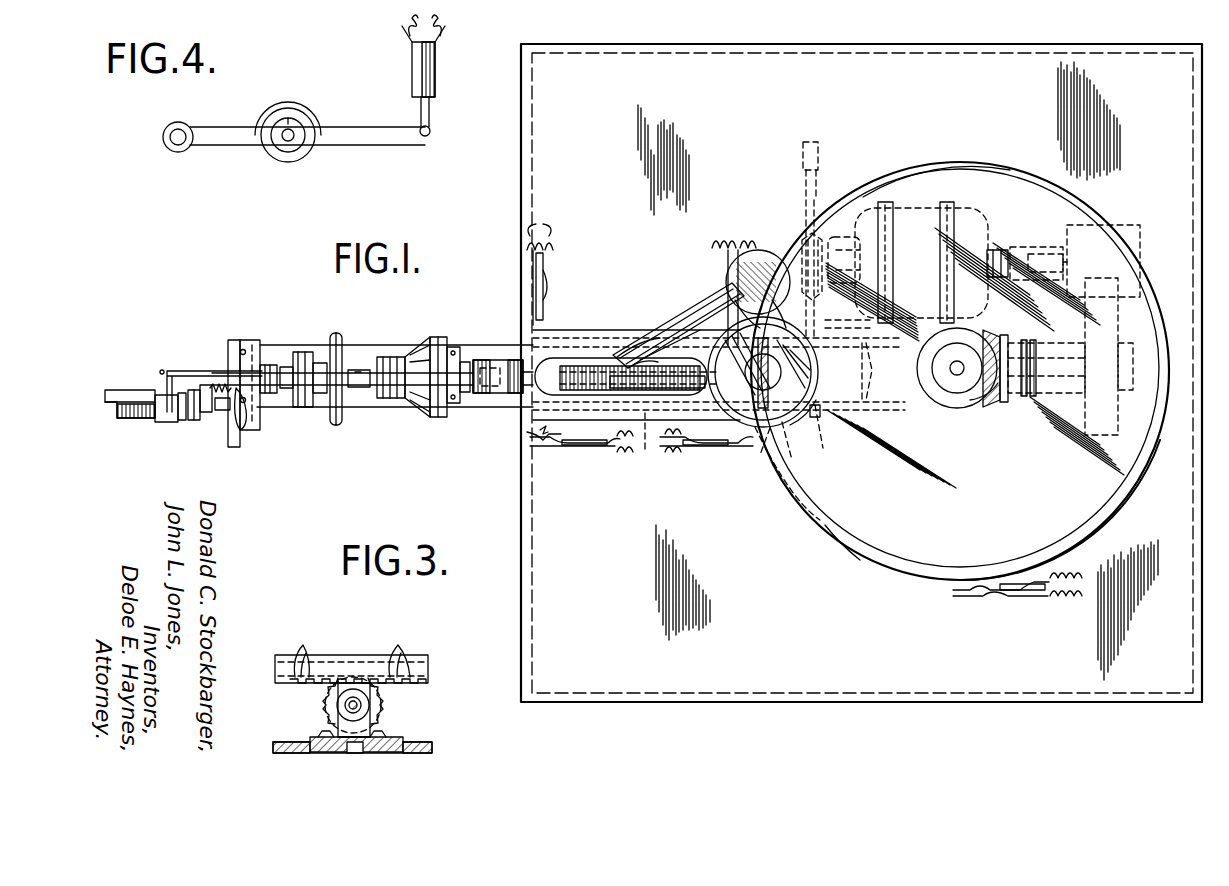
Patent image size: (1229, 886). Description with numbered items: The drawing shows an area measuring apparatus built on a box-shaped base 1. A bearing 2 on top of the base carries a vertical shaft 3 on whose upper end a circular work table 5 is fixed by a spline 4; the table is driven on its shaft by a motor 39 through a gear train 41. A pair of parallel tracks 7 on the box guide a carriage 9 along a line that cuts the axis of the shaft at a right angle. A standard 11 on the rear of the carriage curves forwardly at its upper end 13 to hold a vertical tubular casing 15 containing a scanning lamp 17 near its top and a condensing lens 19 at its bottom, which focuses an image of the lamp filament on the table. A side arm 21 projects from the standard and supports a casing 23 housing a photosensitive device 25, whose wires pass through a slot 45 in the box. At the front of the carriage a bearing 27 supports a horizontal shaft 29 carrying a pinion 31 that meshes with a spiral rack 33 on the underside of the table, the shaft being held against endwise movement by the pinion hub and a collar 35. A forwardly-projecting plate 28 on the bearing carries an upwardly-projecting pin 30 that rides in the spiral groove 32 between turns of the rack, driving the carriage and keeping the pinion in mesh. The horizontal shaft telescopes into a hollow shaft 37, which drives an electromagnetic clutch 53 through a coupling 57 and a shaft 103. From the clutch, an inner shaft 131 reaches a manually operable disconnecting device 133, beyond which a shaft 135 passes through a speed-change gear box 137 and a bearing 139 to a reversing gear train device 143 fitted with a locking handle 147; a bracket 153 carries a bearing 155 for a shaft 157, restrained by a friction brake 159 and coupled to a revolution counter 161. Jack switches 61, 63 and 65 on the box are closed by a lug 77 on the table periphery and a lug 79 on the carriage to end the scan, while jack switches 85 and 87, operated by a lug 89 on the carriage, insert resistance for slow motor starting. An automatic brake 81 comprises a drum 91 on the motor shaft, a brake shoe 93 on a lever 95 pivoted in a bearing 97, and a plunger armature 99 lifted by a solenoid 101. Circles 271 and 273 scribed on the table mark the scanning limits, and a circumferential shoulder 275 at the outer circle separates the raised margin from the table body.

In FIG. 1, the base 1 is at (548, 602).
In FIG. 3, the base 1 is at (285, 757).
In FIG. 1, the bearing 2 is at (960, 408).
In FIG. 1, the vertical shaft 3 is at (950, 376).
In FIG. 1, the spline 4 is at (965, 362).
In FIG. 1, the circular work table 5 is at (1127, 462).
In FIG. 3, the circular work table 5 is at (365, 661).
In FIG. 1, the tracks 7 is at (880, 368).
In FIG. 3, the tracks 7 is at (312, 755).
In FIG. 1, the carriage 9 is at (616, 334).
In FIG. 3, the carriage 9 is at (382, 734).
In FIG. 1, the standard 11 is at (552, 358).
In FIG. 1, the forwardly curved upper end of standard 13 is at (698, 390).
In FIG. 1, the vertical tubular casing 15 is at (788, 424).
In FIG. 1, the scanning lamp 17 is at (818, 372).
In FIG. 1, the condensing lens 19 is at (780, 430).
In FIG. 1, the side arm 21 is at (700, 322).
In FIG. 1, the casing 23 is at (766, 258).
In FIG. 1, the photosensitive device 25 is at (782, 302).
In FIG. 1, the bearing 27 is at (755, 452).
In FIG. 3, the bearing 27 is at (372, 712).
In FIG. 3, the forwardly-projecting plate 28 is at (372, 690).
In FIG. 1, the horizontal shaft 29 is at (688, 330).
In FIG. 3, the horizontal shaft 29 is at (337, 708).
In FIG. 3, the upwardly-projecting pin 30 is at (350, 678).
In FIG. 1, the pinion 31 is at (780, 380).
In FIG. 3, the pinion 31 is at (332, 735).
In FIG. 3, the spiral groove 32 is at (398, 648).
In FIG. 3, the spiral rack 33 is at (300, 648).
In FIG. 1, the collar 35 is at (712, 330).
In FIG. 3, the collar 35 is at (345, 705).
In FIG. 1, the hollow shaft 37 is at (590, 354).
In FIG. 1, the motor 39 is at (918, 205).
In FIG. 1, the gear train 41 is at (1118, 222).
In FIG. 3, the slot 45 is at (356, 755).
In FIG. 1, the electromagnetic clutch 53 is at (424, 414).
In FIG. 1, the coupling 57 is at (496, 398).
In FIG. 1, the jack switch 61 is at (552, 256).
In FIG. 1, the jack switch 63 is at (1002, 594).
In FIG. 1, the jack switch 65 is at (735, 250).
In FIG. 1, the lug 77 is at (1075, 553).
In FIG. 1, the lug 79 is at (550, 302).
In FIG. 4, the automatic brake 81 is at (263, 111).
In FIG. 1, the automatic brake 81 is at (893, 243).
In FIG. 1, the jack switch 85 is at (566, 446).
In FIG. 1, the jack switch 87 is at (720, 450).
In FIG. 1, the lug 89 is at (527, 437).
In FIG. 4, the drum 91 is at (298, 154).
In FIG. 1, the drum 91 is at (852, 260).
In FIG. 4, the brake shoe 93 is at (307, 114).
In FIG. 1, the brake shoe 93 is at (820, 238).
In FIG. 4, the lever 95 is at (356, 136).
In FIG. 1, the lever 95 is at (847, 327).
In FIG. 4, the bearing 97 is at (180, 150).
In FIG. 1, the bearing 97 is at (803, 153).
In FIG. 4, the plunger armature 99 is at (430, 111).
In FIG. 4, the solenoid 101 is at (435, 72).
In FIG. 1, the solenoid 101 is at (834, 434).
In FIG. 1, the shaft 103 is at (455, 356).
In FIG. 1, the inner shaft 131 is at (358, 392).
In FIG. 1, the manually operable disconnecting device 133 is at (334, 422).
In FIG. 1, the shaft 135 is at (287, 365).
In FIG. 1, the speed-change gear box 137 is at (305, 352).
In FIG. 1, the bearing 139 is at (268, 363).
In FIG. 1, the reversing gear train device 143 is at (238, 345).
In FIG. 1, the locking handle 147 is at (248, 440).
In FIG. 1, the bracket 153 is at (180, 378).
In FIG. 1, the bearing 155 is at (185, 422).
In FIG. 1, the shaft 157 is at (158, 420).
In FIG. 1, the friction brake 159 is at (200, 420).
In FIG. 1, the revolution counter 161 is at (130, 398).
In FIG. 1, the outer circle 271 is at (872, 545).
In FIG. 1, the inner circle 273 is at (998, 432).
In FIG. 1, the circumferential shoulder 275 is at (972, 195).